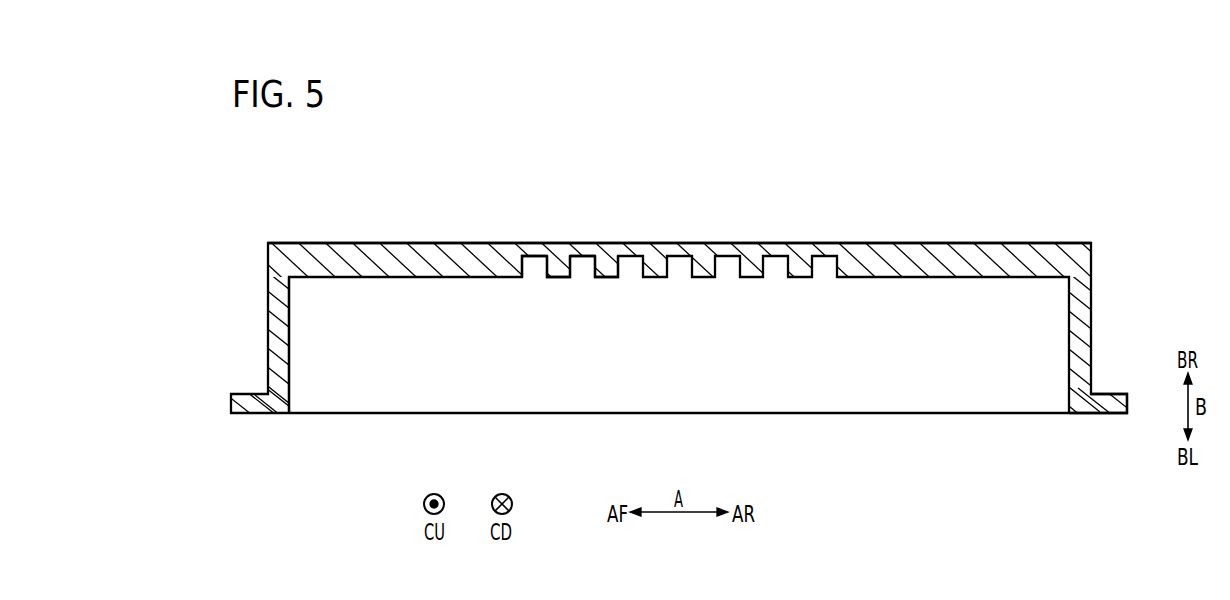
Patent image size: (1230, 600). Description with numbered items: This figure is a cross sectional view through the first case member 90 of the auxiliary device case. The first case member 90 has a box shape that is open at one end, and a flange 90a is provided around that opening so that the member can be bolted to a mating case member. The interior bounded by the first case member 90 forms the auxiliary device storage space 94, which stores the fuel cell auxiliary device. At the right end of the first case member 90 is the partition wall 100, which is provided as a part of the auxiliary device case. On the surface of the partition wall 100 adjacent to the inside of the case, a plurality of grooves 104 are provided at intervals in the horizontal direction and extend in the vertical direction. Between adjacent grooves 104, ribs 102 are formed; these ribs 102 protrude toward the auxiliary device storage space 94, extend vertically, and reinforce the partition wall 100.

The first case member 90 is at (1081, 128).
The flange 90a is at (1112, 400).
The auxiliary device storage space 94 is at (289, 372).
The partition wall 100 is at (901, 262).
The rib 102 is at (558, 268).
The groove 104 is at (528, 257).